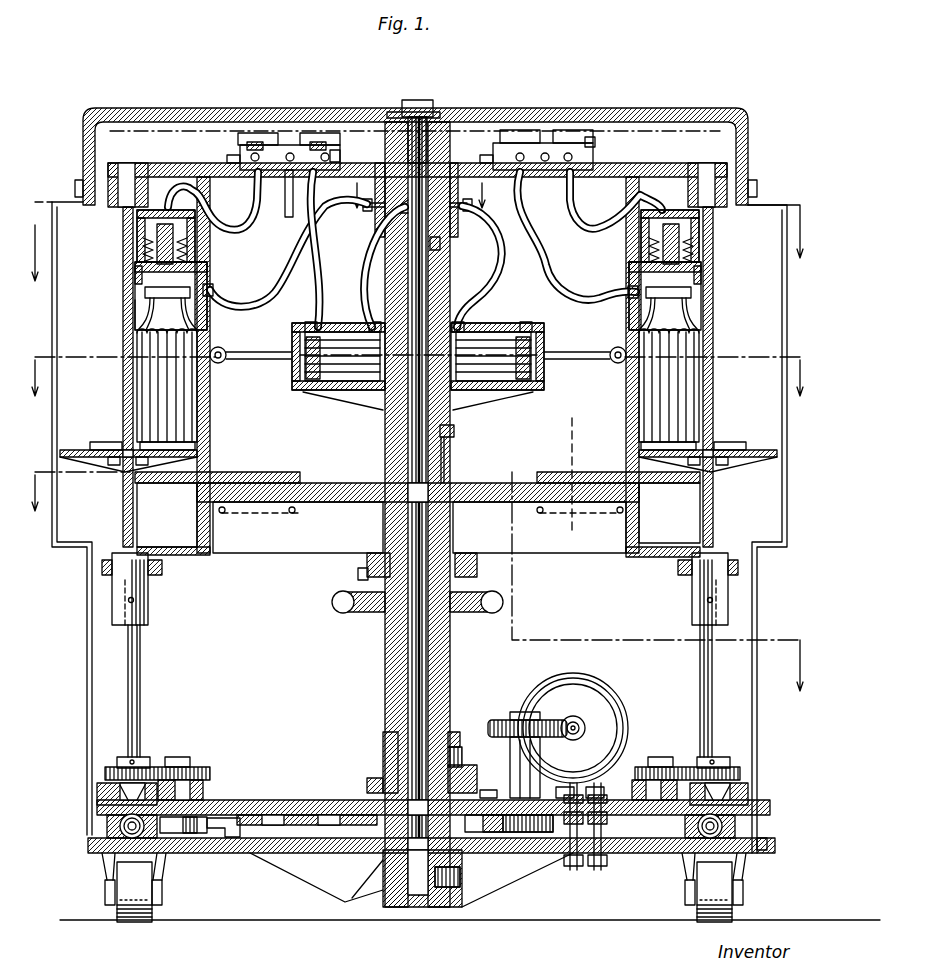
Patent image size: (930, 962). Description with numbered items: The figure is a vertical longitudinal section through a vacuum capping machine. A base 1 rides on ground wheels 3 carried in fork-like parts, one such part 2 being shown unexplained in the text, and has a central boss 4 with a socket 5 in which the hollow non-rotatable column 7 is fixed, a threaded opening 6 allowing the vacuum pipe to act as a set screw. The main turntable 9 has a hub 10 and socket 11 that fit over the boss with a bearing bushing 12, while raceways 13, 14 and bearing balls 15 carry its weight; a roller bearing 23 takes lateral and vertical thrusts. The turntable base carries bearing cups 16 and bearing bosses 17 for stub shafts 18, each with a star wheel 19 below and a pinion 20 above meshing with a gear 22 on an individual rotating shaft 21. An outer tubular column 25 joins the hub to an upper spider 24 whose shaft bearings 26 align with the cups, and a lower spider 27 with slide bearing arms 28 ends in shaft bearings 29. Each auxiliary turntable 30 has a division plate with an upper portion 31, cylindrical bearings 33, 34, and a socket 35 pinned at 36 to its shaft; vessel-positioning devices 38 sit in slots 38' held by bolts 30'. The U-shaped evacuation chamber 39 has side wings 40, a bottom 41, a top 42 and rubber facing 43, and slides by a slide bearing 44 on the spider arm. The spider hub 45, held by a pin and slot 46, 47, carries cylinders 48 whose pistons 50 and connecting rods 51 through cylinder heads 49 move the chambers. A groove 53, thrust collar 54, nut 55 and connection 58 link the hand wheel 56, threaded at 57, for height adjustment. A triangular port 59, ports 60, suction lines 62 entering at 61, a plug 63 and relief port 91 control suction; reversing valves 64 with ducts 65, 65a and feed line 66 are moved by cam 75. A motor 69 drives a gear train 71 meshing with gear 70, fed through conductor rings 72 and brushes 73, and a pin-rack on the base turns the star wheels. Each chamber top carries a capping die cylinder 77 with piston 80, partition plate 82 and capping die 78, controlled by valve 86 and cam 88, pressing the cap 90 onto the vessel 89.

The base 1 is at (312, 856).
The caster fork 2 is at (160, 862).
The ground wheels 3 is at (135, 905).
The central boss 4 is at (392, 895).
The socket 5 is at (411, 544).
The threaded opening 6 is at (450, 888).
The hollow non-rotatable column 7 is at (418, 890).
The main turntable 9 is at (325, 800).
The hub 10 is at (384, 738).
The socket 11 is at (380, 780).
The bearing bushing 12 is at (472, 765).
The ball raceway 13 is at (688, 862).
The ball raceway 14 is at (680, 842).
The bearing balls 15 is at (110, 840).
The bearing cups 16 is at (748, 790).
The bearing bosses 17 is at (205, 790).
The stub shafts 18 is at (188, 768).
The star wheel 19 is at (200, 835).
The pinion 20 is at (166, 767).
The turntable rotating shaft 21 is at (700, 688).
The gear 22 is at (112, 760).
The roller bearing 23 is at (98, 790).
The upper spider 24 is at (650, 165).
The outer tubular column 25 is at (450, 695).
The shaft bearings 26 is at (703, 163).
The lower spider 27 is at (386, 455).
The slide bearing arms 28 is at (513, 485).
The shaft bearings 29 is at (730, 547).
The auxiliary turntable 30 is at (418, 365).
The bolts 30' is at (173, 518).
The upper portion of division plate 31 is at (124, 386).
The cylindrical bearing 33 is at (127, 163).
The cylindrical bearing 34 is at (140, 580).
The socket 35 is at (123, 618).
The pin 36 is at (135, 600).
The vessel-positioning devices 38 is at (418, 428).
The slots 38' is at (418, 478).
The evacuation chamber 39 is at (212, 333).
The side wings 40 is at (206, 318).
The bottom 41 is at (680, 485).
The top 42 is at (196, 266).
The rubber facing 43 is at (140, 272).
The slide bearing 44 is at (258, 472).
The hub 45 is at (472, 410).
The pin 46 is at (455, 432).
The slot 47 is at (447, 459).
The cylinders 48 is at (458, 326).
The cylinder head 49 is at (542, 345).
The piston 50 is at (322, 368).
The connecting rod 51 is at (276, 362).
The groove 53 is at (405, 556).
The thrust collar 54 is at (467, 556).
The nut 55 is at (462, 613).
The hand wheel 56 is at (342, 613).
The threads 57 is at (385, 647).
The connection 58 is at (358, 575).
The triangular valve port 59 is at (398, 220).
The ports 60 is at (378, 212).
The suction line entry 61 is at (212, 292).
The suction lines 62 is at (278, 280).
The plug 63 is at (422, 108).
The reversing valve 64 is at (338, 160).
The duct 65 is at (318, 300).
The duct 65a is at (370, 308).
The feed line 66 is at (288, 212).
The motor 69 is at (605, 690).
The gear 70 is at (350, 846).
The gear train 71 is at (548, 722).
The current conductor rings 72 is at (262, 812).
The brushes 73 is at (574, 868).
The cam 75 is at (490, 128).
The capping die cylinder 77 is at (190, 215).
The capping die 78 is at (700, 298).
The piston 80 is at (642, 243).
The partition plate 82 is at (630, 262).
The valve 86 is at (240, 157).
The cam 88 is at (588, 133).
The vessel 89 is at (150, 363).
The cap 90 is at (146, 297).
The relief port 91 is at (441, 246).